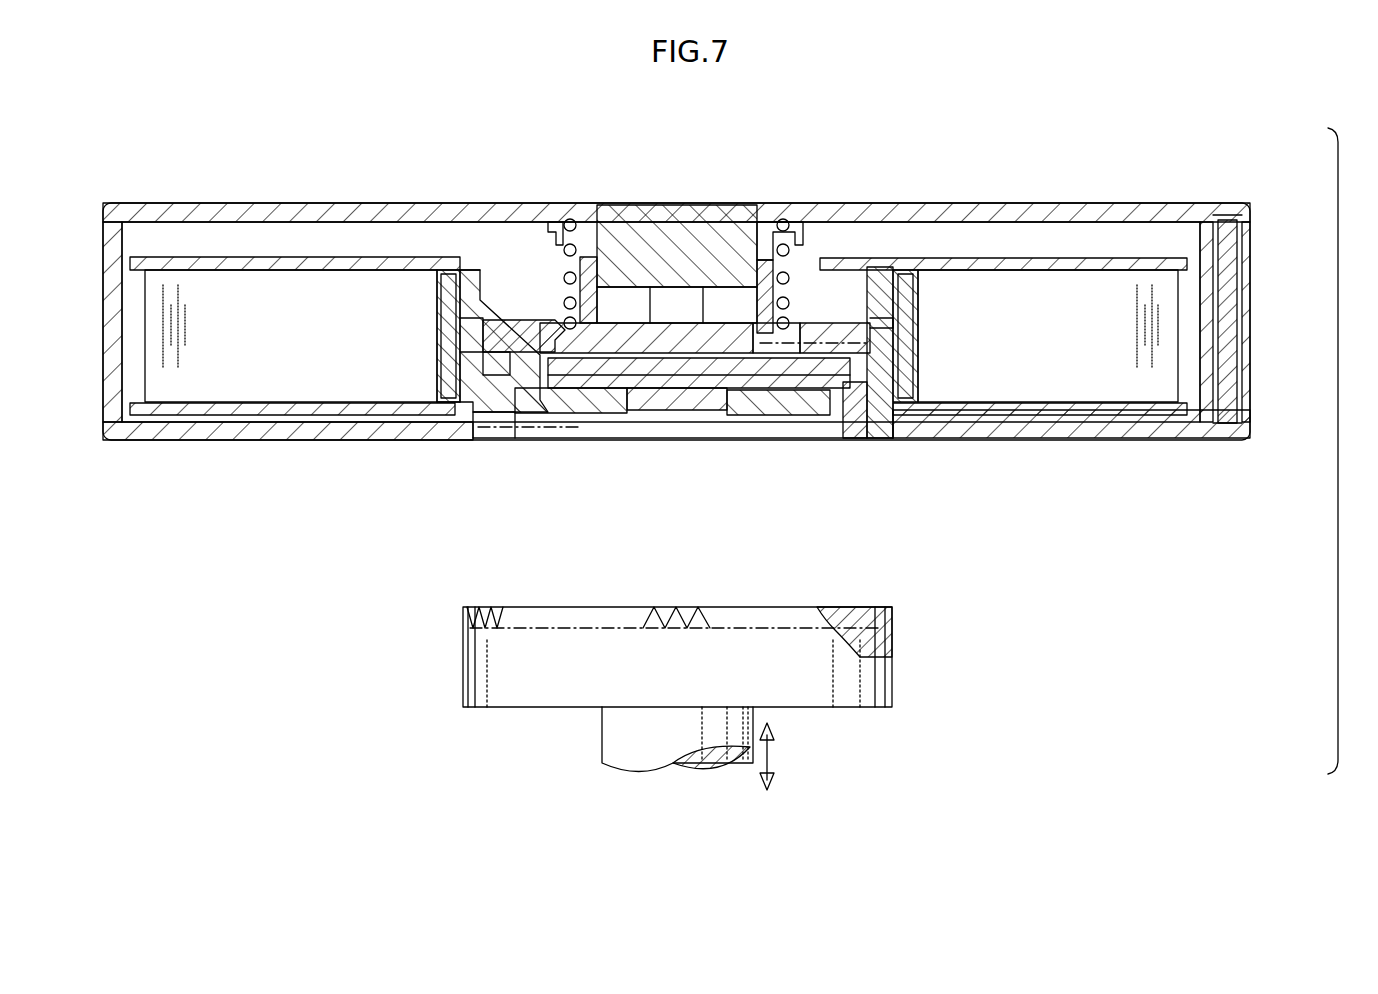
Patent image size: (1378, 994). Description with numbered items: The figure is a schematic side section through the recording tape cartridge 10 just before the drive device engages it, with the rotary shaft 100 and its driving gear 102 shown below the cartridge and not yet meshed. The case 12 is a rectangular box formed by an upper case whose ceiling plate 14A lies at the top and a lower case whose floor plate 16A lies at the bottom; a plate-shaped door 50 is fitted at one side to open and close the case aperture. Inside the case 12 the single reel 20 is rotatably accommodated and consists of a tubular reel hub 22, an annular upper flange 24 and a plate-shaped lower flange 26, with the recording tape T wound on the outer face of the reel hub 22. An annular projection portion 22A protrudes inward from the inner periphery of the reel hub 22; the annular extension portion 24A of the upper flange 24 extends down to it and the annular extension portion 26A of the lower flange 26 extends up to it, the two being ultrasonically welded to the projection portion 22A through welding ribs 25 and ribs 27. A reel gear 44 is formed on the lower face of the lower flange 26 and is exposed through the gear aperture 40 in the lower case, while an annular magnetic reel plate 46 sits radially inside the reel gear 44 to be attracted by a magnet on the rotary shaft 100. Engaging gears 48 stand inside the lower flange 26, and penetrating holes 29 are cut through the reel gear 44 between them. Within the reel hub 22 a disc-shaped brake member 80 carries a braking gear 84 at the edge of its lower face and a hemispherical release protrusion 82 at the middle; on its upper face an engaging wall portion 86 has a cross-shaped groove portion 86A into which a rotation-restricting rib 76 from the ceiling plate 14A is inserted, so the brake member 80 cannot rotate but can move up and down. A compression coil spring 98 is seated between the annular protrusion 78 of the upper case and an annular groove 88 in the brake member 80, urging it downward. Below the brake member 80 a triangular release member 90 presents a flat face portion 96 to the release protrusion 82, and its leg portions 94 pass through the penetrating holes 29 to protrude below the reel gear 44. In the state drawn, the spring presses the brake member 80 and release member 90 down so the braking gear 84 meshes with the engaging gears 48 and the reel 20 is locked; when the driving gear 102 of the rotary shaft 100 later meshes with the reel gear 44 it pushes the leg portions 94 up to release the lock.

The recording tape cartridge 10 is at (1195, 165).
The case 12 is at (717, 322).
The ceiling plate 14A is at (1000, 203).
The floor plate 16A is at (1028, 432).
The reel 20 is at (1085, 257).
The reel hub 22 is at (920, 335).
The projection portion 22A is at (885, 318).
The upper flange 24 is at (262, 256).
The annular extension portion 24A is at (458, 275).
The ribs for welding 25 is at (440, 300).
The lower flange 26 is at (240, 416).
The annular extension portion 26A is at (452, 372).
The ribs for welding 27 is at (455, 336).
The penetrating holes 29 is at (880, 433).
The gear aperture 40 is at (456, 394).
The reel gear 44 is at (488, 434).
The reel plate 46 is at (777, 416).
The engaging gears 48 is at (460, 348).
The door 50 is at (1228, 250).
The rotation-restricting rib 76 is at (725, 245).
The annular protrusion 78 is at (795, 288).
The brake member 80 is at (512, 318).
The release protrusion 82 is at (625, 414).
The braking gear 84 is at (818, 402).
The engaging wall portion 86 is at (781, 238).
The groove portion 86A is at (683, 295).
The annular groove 88 is at (820, 287).
The release member 90 is at (867, 318).
The leg portions 94 is at (855, 432).
The flat face portion 96 is at (628, 205).
The compression coil spring 98 is at (585, 205).
The rotary shaft 100 is at (598, 735).
The driving gear 102 is at (855, 612).
The recording tape T is at (1165, 310).